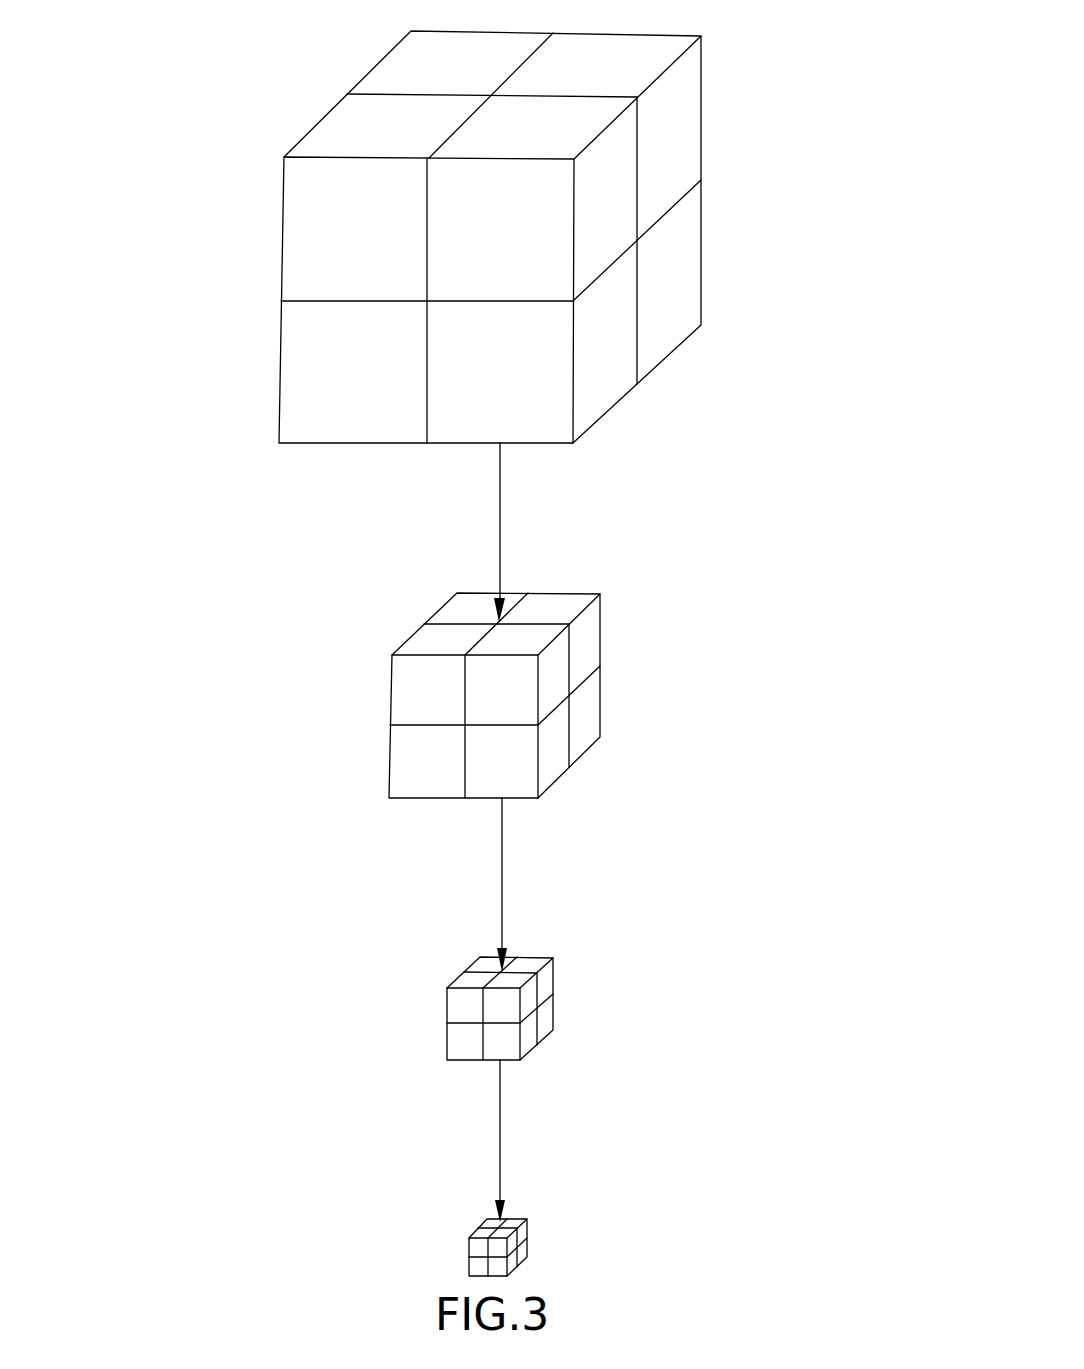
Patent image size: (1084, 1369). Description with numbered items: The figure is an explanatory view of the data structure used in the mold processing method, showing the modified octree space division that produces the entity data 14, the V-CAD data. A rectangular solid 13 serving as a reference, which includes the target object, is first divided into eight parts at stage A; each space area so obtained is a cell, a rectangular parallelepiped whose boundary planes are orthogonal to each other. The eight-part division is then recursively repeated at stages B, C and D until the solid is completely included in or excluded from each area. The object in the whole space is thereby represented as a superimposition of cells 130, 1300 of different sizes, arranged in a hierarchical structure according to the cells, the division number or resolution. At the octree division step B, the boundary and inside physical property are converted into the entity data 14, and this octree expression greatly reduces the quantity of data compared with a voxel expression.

The entity data 14 is at (208, 105).
The rectangular solid 13 is at (625, 405).
The cell 130 is at (415, 60).
The cell 1300 is at (453, 602).
The eight-part division A is at (195, 222).
The octree division step B is at (330, 712).
The recursive division stage C is at (402, 992).
The recursive division stage D is at (418, 1226).